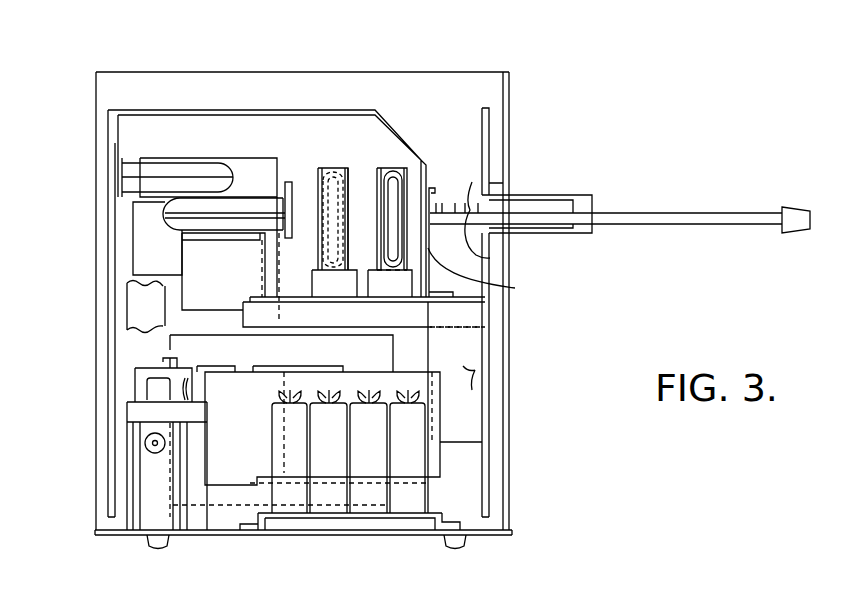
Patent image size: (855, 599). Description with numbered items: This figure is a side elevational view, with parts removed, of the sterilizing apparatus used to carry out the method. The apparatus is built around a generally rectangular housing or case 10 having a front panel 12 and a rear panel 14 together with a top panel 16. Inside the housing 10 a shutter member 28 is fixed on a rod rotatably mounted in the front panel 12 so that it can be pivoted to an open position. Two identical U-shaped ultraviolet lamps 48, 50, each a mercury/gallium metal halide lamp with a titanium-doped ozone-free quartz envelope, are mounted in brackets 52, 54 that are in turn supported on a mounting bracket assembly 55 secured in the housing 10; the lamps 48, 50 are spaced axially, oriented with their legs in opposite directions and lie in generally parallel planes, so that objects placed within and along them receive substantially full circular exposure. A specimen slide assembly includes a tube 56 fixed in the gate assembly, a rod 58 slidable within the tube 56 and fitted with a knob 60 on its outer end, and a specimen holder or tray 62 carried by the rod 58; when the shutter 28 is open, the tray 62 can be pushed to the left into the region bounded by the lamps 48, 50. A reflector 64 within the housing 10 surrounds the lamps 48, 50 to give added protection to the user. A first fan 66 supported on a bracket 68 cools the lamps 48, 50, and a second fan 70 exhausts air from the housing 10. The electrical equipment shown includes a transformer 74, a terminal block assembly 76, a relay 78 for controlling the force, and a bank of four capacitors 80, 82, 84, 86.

The housing 10 is at (90, 97).
The front panel 12 is at (511, 443).
The rear panel 14 is at (97, 408).
The top panel 16 is at (442, 72).
The shutter member 28 is at (515, 288).
The lamp 48 is at (395, 212).
The lamp 50 is at (348, 177).
The bracket 52 is at (393, 165).
The bracket 54 is at (328, 165).
The mounting bracket assembly 55 is at (475, 370).
The tube 56 is at (559, 190).
The rod 58 is at (680, 212).
The knob 60 is at (795, 207).
The specimen holder or tray 62 is at (490, 258).
The reflector 64 is at (213, 105).
The first fan 66 is at (199, 205).
The bracket 68 is at (289, 176).
The second fan 70 is at (146, 160).
The transformer 74 is at (165, 349).
The terminal block assembly 76 is at (125, 297).
The relay 78 is at (125, 457).
The capacitor 80 is at (292, 495).
The capacitor 82 is at (330, 495).
The capacitor 84 is at (372, 495).
The capacitor 86 is at (432, 500).